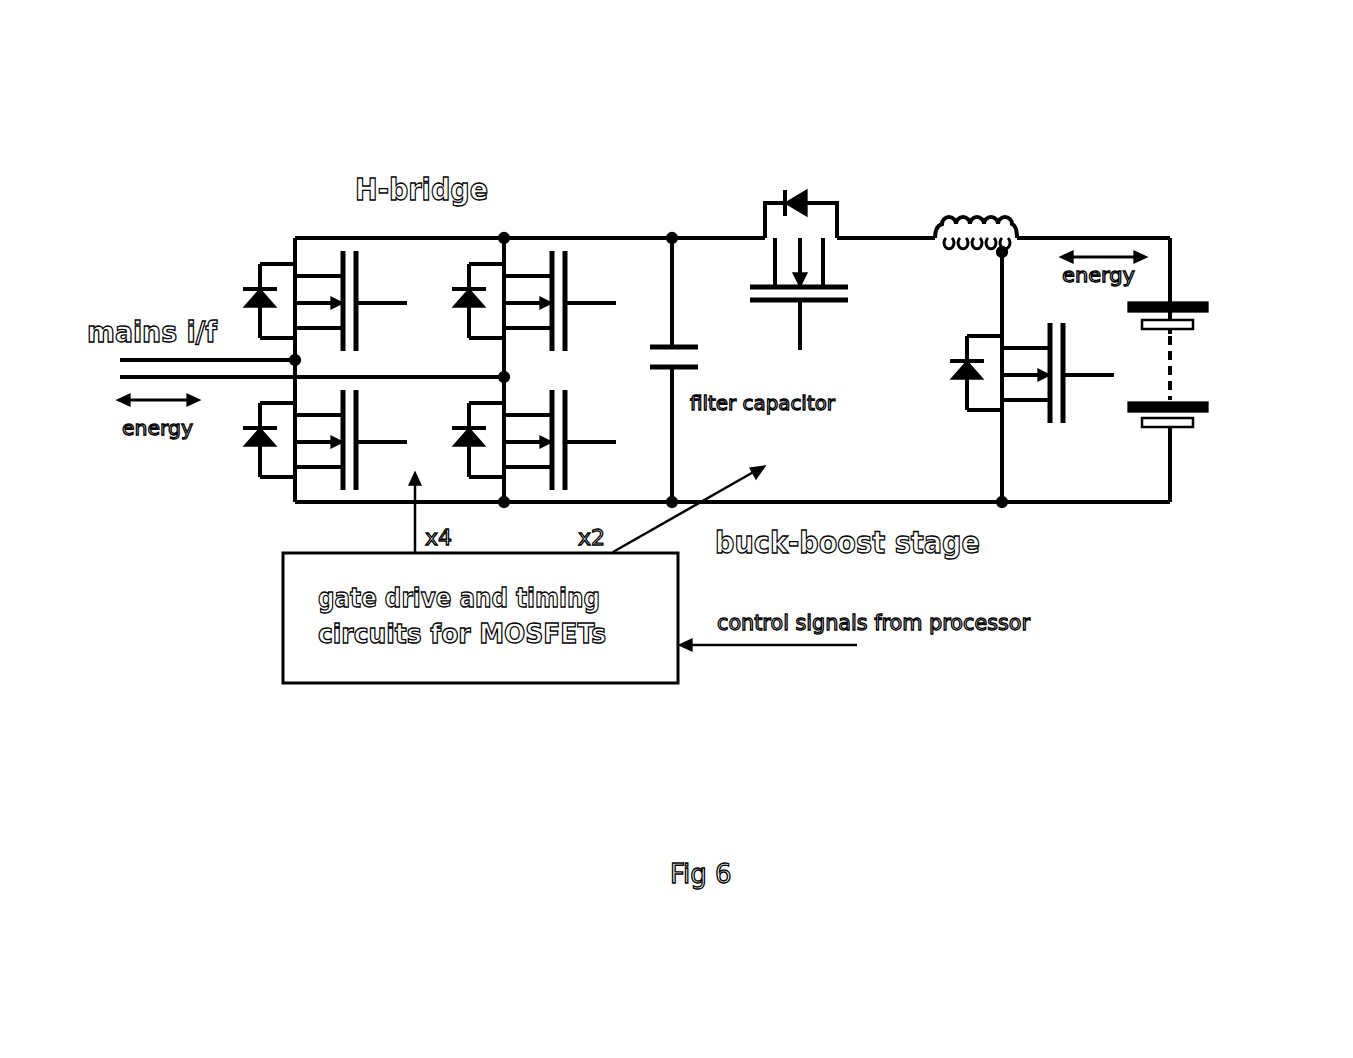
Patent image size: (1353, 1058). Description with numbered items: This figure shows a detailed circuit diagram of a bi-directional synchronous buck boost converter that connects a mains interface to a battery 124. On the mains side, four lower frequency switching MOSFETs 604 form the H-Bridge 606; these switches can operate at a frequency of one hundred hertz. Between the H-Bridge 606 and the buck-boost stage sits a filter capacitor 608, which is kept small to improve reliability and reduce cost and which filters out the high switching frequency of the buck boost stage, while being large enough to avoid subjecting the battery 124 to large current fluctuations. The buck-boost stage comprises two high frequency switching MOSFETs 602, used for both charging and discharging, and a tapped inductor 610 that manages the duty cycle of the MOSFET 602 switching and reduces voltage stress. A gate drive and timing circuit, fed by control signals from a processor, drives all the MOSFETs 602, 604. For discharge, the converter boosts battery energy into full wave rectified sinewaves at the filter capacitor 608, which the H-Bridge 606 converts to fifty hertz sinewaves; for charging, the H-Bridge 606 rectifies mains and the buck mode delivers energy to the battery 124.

The high frequency switching MOSFETs 602 is at (834, 202).
The lower frequency switching MOSFETs 604 is at (325, 268).
The H-Bridge 606 is at (312, 359).
The filter capacitor 608 is at (688, 340).
The tapped inductor 610 is at (996, 223).
The battery 124 is at (1198, 398).